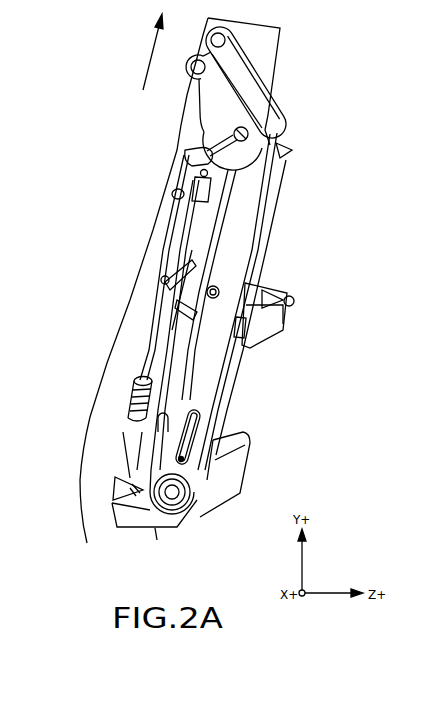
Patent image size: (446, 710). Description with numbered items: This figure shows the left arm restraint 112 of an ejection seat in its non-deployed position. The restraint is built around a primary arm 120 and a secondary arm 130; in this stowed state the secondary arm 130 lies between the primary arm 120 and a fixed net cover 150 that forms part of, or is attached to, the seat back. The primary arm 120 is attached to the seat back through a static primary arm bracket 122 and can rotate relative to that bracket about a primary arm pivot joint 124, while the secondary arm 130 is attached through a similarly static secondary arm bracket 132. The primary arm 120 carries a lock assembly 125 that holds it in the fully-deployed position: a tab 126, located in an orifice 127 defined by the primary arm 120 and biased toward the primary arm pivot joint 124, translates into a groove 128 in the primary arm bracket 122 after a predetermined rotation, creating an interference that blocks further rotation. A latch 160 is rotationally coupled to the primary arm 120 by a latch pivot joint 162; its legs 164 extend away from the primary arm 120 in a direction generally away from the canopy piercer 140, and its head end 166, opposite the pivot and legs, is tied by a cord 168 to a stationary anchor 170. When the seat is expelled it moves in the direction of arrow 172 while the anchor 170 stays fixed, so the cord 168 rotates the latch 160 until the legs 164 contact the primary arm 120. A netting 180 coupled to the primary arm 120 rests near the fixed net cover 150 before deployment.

The left arm restraint 112 is at (340, 75).
The primary arm 120 is at (250, 188).
The primary arm bracket 122 is at (238, 470).
The primary arm pivot joint 124 is at (178, 508).
The lock assembly 125 is at (252, 416).
The tab 126 is at (201, 416).
The orifice 127 is at (182, 500).
The groove 128 is at (133, 490).
The secondary arm 130 is at (270, 114).
The secondary arm bracket 132 is at (273, 310).
The canopy piercer 140 is at (284, 148).
The fixed net cover 150 is at (137, 300).
The latch 160 is at (212, 215).
The latch pivot joint 162 is at (220, 292).
The legs 164 is at (188, 318).
The head end 166 is at (185, 160).
The cord 168 is at (180, 247).
The anchor 170 is at (132, 390).
The arrow 172 is at (146, 61).
The netting 180 is at (235, 139).